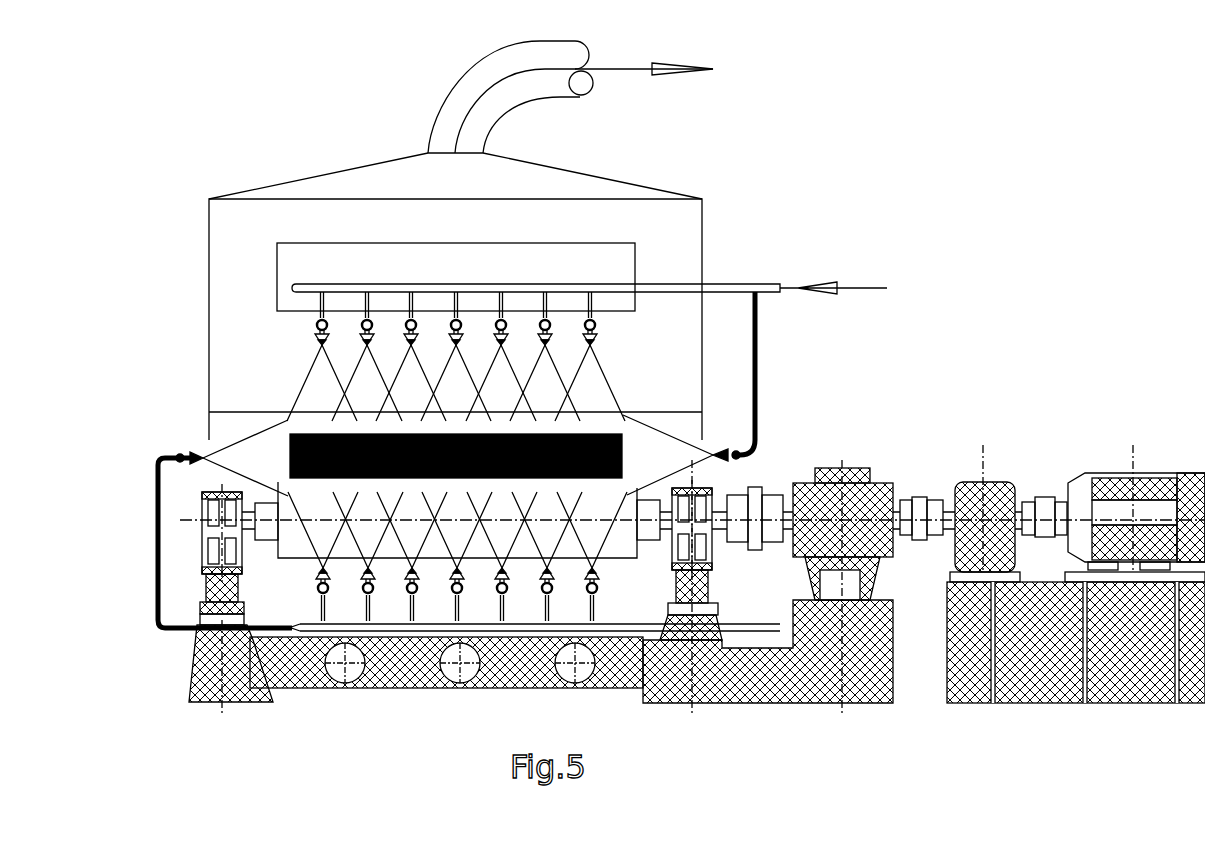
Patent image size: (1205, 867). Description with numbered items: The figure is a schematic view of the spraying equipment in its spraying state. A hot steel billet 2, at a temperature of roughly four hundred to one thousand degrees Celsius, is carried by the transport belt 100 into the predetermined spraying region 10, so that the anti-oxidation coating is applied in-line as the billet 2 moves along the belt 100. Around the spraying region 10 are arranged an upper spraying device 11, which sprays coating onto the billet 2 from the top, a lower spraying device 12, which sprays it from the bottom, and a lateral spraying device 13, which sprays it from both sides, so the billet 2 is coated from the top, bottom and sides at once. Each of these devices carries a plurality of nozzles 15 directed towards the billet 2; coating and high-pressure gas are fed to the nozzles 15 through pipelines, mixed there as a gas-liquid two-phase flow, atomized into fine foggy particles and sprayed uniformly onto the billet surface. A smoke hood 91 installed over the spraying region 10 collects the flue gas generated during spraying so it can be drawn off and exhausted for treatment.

The billet 2 is at (273, 460).
The predetermined spraying region 10 is at (300, 440).
The upper spraying device 11 is at (347, 287).
The lower spraying device 12 is at (325, 690).
The lateral spraying device 13 is at (160, 456).
The nozzles 15 is at (320, 343).
The smoke hood 91 is at (415, 177).
The transport belt 100 is at (240, 638).